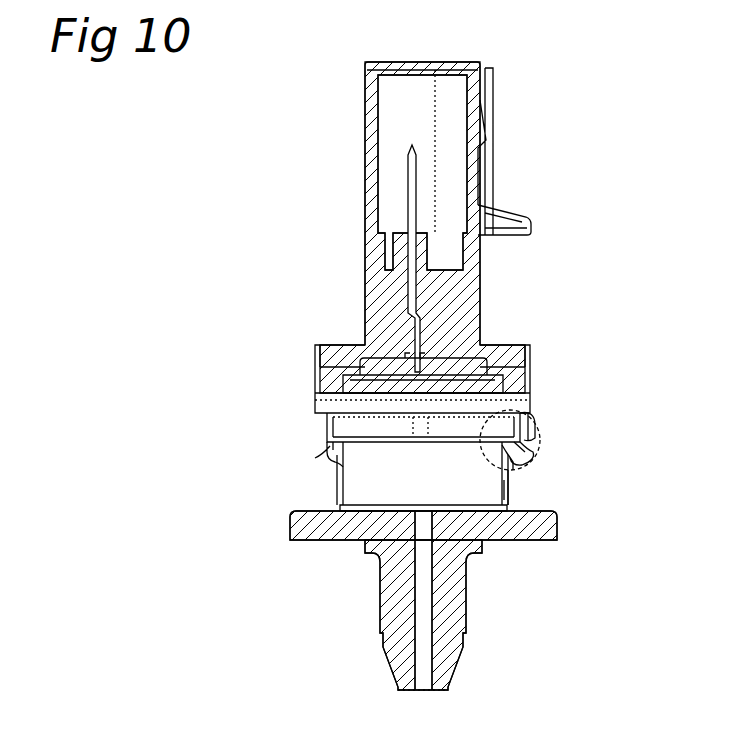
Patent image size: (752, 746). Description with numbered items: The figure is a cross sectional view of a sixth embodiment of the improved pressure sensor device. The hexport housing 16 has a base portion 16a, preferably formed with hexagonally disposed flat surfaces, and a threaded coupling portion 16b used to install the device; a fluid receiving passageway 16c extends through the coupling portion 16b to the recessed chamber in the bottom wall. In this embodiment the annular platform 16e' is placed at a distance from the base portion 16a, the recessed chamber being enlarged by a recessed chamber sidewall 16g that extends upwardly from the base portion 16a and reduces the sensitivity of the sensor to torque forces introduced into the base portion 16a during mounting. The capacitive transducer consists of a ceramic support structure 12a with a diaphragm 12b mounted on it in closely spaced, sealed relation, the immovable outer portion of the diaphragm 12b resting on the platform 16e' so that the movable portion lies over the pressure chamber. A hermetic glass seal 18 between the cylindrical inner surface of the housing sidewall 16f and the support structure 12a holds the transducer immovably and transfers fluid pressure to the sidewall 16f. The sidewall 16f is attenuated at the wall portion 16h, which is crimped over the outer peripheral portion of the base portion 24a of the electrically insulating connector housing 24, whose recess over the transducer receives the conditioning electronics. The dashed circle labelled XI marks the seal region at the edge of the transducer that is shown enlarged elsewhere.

The connector housing 24 is at (480, 317).
The base portion of the connector housing 24a is at (512, 378).
The attenuated wall portion 16h is at (530, 373).
The hermetic seal 18 is at (512, 442).
The sidewall 16f is at (537, 410).
The support structure 12a is at (527, 436).
The diaphragm 12b is at (343, 465).
The detail XI indicator XI is at (545, 426).
The annular platform 16e' is at (565, 468).
The recessed chamber sidewall 16g is at (508, 490).
The base portion 16a is at (558, 528).
The hexport housing 16 is at (493, 552).
The fluid receiving passageway 16c is at (423, 605).
The threaded coupling portion 16b is at (468, 633).